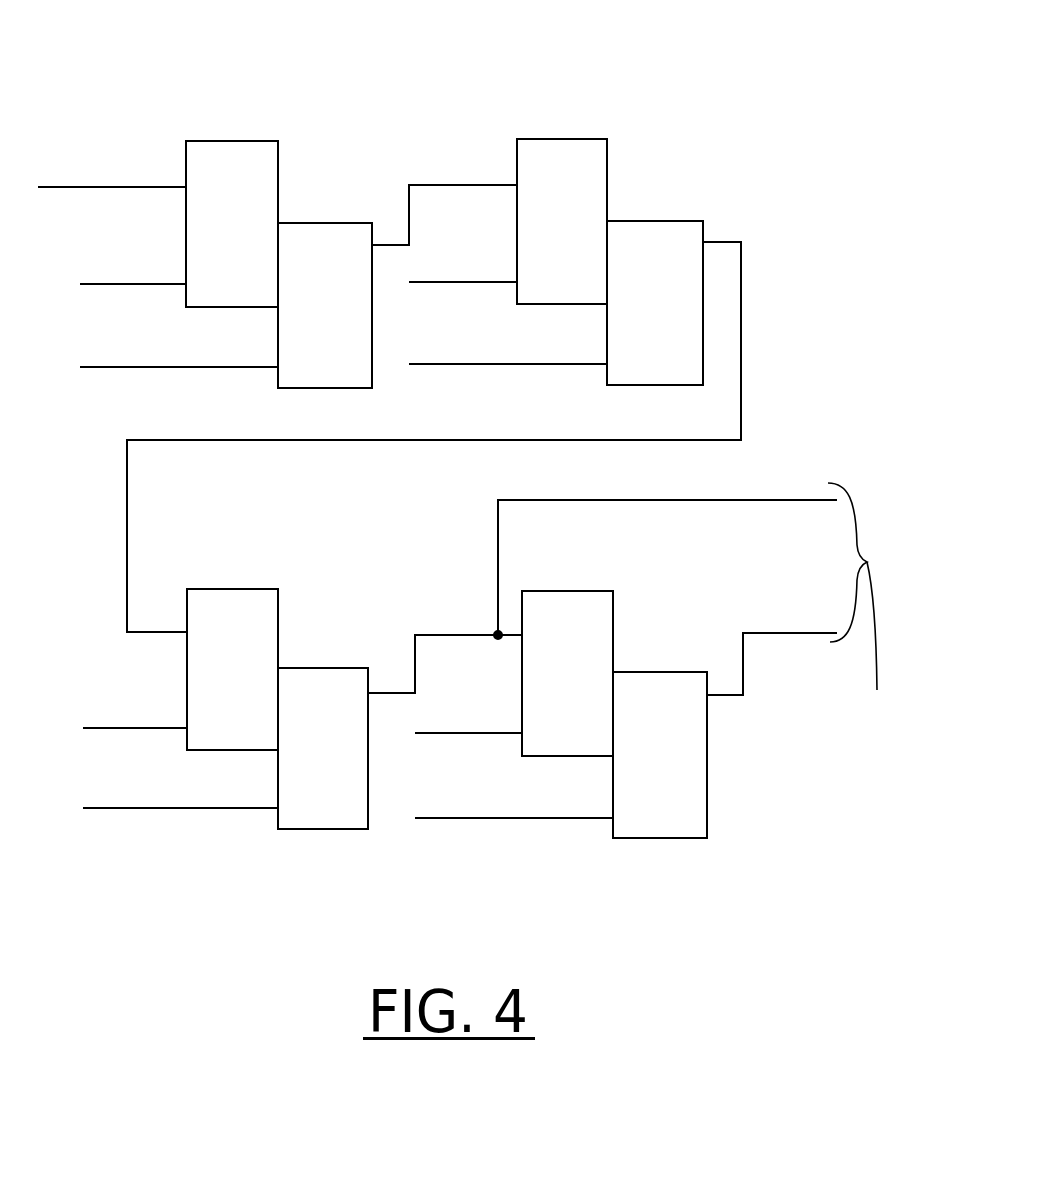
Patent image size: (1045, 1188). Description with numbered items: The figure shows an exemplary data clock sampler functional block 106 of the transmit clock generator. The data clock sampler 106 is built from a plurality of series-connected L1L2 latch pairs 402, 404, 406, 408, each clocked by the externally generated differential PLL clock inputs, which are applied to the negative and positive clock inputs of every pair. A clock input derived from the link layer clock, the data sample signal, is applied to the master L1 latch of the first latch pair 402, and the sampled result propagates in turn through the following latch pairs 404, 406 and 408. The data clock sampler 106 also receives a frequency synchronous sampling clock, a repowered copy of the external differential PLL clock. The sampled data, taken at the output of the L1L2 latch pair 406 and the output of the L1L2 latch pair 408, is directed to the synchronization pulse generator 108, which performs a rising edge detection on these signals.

The Data Clock Sampler functional block 106 is at (463, 46).
The first L1L2 latch pair 402 is at (279, 250).
The L1L2 latch pair 404 is at (610, 248).
The L1L2 latch pair 406 is at (277, 694).
The L1L2 latch pair 408 is at (614, 699).
The Synchronization Pulse Generator 108 is at (840, 631).